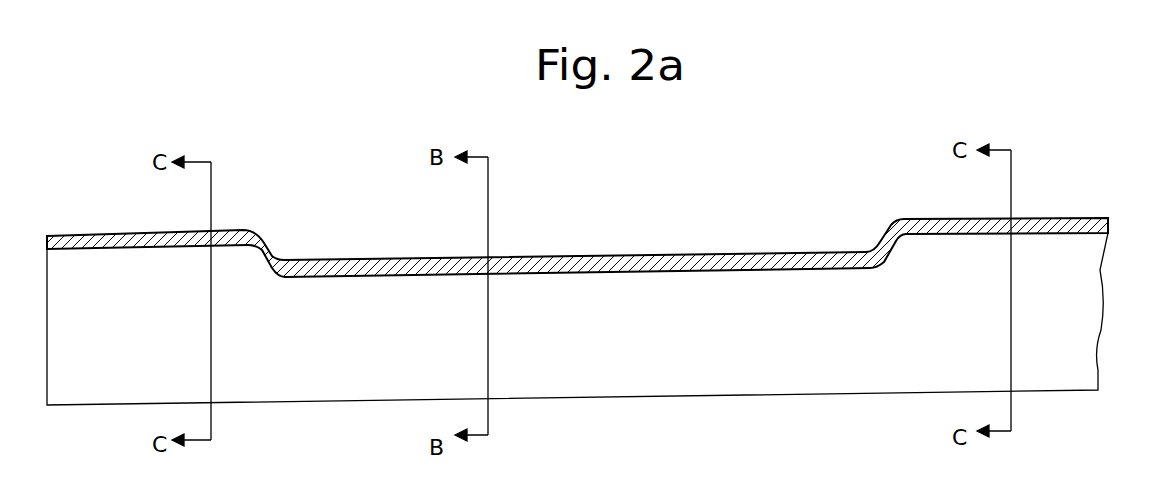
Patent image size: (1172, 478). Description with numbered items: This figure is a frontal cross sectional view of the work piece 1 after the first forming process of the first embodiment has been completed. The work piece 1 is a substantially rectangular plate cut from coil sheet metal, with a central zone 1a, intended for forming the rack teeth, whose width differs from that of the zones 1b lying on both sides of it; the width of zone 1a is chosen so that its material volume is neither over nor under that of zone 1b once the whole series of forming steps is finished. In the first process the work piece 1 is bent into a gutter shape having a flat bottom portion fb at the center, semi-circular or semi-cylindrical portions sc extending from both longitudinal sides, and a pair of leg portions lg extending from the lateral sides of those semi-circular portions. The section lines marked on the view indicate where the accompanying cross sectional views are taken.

The work piece 1 is at (582, 155).
The zone 1a is at (690, 236).
The zone 1b is at (153, 208).
The semi-circular portion sc is at (126, 236).
The flat bottom portion fb is at (350, 262).
The leg portion lg is at (1063, 373).